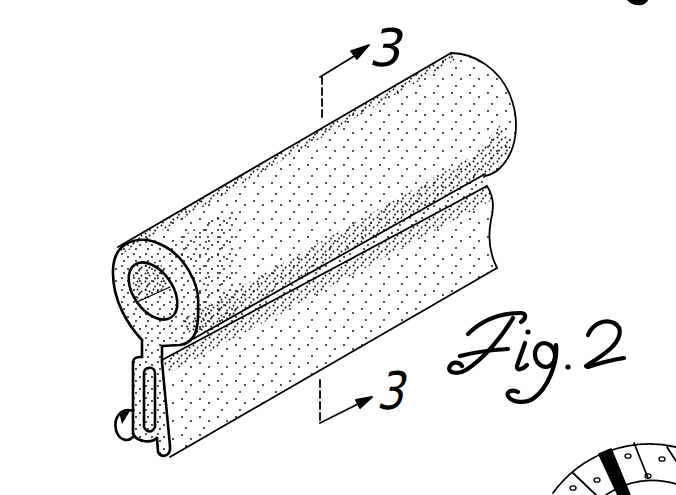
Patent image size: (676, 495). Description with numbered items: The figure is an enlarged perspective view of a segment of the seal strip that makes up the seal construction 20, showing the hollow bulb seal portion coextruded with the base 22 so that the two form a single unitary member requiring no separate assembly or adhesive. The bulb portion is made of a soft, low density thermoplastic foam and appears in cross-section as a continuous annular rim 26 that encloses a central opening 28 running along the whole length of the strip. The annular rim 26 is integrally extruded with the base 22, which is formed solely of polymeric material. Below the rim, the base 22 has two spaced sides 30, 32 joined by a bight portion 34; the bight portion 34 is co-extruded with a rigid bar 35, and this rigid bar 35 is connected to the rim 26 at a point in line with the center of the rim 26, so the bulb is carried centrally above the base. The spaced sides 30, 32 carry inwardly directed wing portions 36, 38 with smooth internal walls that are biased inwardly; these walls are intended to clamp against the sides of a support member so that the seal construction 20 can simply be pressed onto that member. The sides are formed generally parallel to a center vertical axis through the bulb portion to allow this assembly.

The seal construction 20 is at (492, 71).
The base 22 is at (494, 239).
The annular rim 26 is at (122, 262).
The central opening 28 is at (142, 275).
The side 30 is at (134, 393).
The side 32 is at (163, 401).
The bight portion 34 is at (149, 361).
The rigid bar 35 is at (485, 181).
The wing portion 36 is at (129, 430).
The wing portion 38 is at (158, 430).